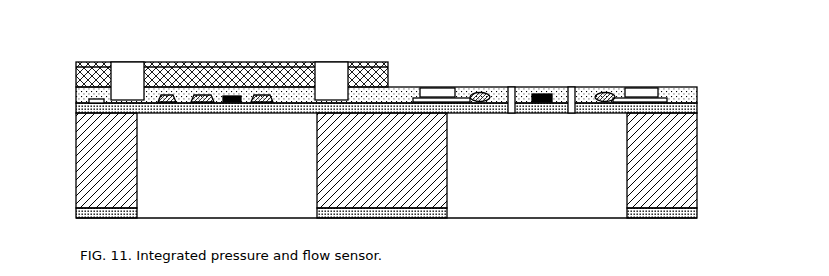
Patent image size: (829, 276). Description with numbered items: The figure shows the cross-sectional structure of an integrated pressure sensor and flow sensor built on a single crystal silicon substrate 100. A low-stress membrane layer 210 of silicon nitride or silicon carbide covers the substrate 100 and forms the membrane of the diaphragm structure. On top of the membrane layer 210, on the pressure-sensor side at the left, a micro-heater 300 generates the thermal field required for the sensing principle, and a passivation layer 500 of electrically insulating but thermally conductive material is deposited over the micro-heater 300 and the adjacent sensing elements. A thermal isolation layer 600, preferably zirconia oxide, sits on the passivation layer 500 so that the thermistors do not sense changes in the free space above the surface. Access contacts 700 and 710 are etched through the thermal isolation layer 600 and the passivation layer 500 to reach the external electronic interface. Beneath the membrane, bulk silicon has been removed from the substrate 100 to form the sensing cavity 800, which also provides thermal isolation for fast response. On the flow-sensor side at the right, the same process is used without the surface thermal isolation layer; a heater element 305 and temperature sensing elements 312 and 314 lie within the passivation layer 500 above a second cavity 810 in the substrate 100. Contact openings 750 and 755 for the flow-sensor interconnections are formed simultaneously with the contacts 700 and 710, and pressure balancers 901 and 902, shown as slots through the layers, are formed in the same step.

The single crystal silicon substrate 100 is at (107, 179).
The membrane layer 210 is at (76, 110).
The micro-heater 300 is at (229, 96).
The heater element 305 is at (540, 94).
The temperature sensor 312 is at (480, 93).
The temperature sensor 314 is at (600, 93).
The passivation layer 500 is at (76, 98).
The thermal isolation layer 600 is at (76, 72).
The access contact 700 is at (325, 85).
The access contact 710 is at (127, 80).
The flow sensor contact opening 750 is at (437, 92).
The flow sensor contact opening 755 is at (637, 88).
The sensing cavity 800 is at (220, 171).
The cavity 810 is at (530, 171).
The pressure balancer 901 is at (571, 90).
The pressure balancer 902 is at (509, 90).